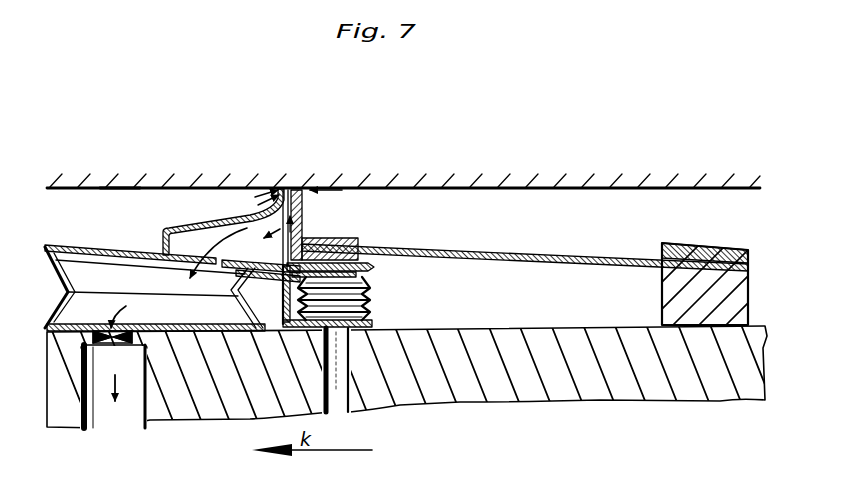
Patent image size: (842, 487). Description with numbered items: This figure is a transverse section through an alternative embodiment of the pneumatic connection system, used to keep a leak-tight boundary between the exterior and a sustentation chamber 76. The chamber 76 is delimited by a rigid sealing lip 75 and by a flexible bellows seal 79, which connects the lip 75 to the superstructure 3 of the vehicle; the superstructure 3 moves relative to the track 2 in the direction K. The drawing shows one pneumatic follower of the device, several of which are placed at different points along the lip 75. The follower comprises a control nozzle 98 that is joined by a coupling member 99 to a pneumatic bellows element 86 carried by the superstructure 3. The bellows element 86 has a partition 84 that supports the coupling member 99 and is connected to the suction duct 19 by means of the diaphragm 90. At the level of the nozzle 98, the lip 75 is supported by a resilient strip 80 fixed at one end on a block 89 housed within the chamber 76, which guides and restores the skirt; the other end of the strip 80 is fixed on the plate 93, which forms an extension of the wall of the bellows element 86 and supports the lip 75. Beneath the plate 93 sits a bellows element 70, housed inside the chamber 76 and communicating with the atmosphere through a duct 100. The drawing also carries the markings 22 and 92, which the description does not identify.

The track 2 is at (116, 202).
The superstructure 3 is at (207, 417).
The suction duct 19 is at (122, 412).
The gap 22 is at (266, 231).
The bellows element 70 is at (372, 300).
The rigid sealing lip 75 is at (303, 228).
The sustentation chamber 76 is at (483, 212).
The flexible bellows seal 79 is at (284, 298).
The resilient strip 80 is at (553, 248).
The partition 84 is at (82, 248).
The pneumatic bellows element 86 is at (70, 284).
The block 89 is at (698, 290).
The diaphragm 90 is at (118, 346).
The block 92 is at (355, 240).
The plate 93 is at (372, 270).
The control nozzle 98 is at (303, 198).
The coupling member 99 is at (237, 218).
The duct 100 is at (353, 405).